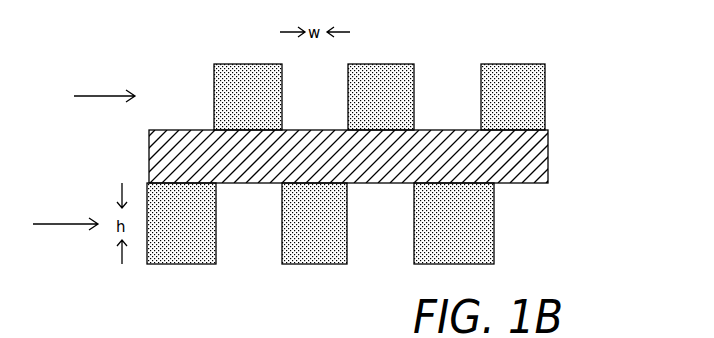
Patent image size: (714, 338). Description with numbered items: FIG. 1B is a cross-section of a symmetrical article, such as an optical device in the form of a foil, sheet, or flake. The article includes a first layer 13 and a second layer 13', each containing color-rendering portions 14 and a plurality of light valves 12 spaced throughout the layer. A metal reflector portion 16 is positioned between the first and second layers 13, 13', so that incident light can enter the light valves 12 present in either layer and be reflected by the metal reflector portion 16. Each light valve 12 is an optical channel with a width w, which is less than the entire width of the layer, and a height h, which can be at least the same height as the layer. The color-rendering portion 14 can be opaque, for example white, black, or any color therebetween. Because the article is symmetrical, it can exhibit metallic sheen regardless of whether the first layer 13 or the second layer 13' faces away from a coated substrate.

The light valve 12 is at (371, 136).
The first layer 13 is at (88, 98).
The second layer 13' is at (49, 227).
The color-rendering portion 14 is at (528, 91).
The metal reflector portion 16 is at (520, 168).